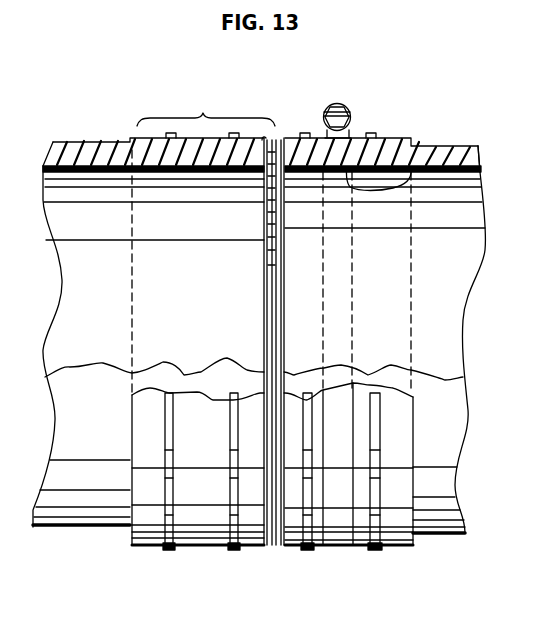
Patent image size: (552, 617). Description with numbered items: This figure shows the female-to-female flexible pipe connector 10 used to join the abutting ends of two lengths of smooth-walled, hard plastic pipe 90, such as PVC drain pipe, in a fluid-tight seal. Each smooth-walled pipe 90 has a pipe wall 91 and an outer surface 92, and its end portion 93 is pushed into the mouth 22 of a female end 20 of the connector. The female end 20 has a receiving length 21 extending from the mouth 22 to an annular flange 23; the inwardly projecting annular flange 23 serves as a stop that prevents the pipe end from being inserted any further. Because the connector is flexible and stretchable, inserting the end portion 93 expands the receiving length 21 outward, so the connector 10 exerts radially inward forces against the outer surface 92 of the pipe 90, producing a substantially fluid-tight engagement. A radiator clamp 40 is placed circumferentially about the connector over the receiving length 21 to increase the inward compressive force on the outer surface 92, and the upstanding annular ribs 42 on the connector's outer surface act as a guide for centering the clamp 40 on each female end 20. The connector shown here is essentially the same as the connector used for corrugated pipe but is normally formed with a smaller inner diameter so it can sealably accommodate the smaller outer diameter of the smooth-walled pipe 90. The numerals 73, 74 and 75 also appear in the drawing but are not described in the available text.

The female-to-female flexible pipe connector 10 is at (143, 73).
The female end 20 is at (267, 100).
The receiving length 21 is at (206, 105).
The mouth 22 is at (128, 137).
The annular flange 23 is at (284, 147).
The radiator clamp 40 is at (350, 112).
The upstanding annular ribs 42 is at (375, 549).
The body wall 73 is at (243, 339).
The upper body line 74 is at (242, 253).
The cleat block 75 is at (206, 347).
The smooth-walled pipe 90 is at (59, 138).
The pipe wall 91 is at (78, 143).
The outer surface 92 is at (100, 143).
The end portion 93 is at (411, 170).